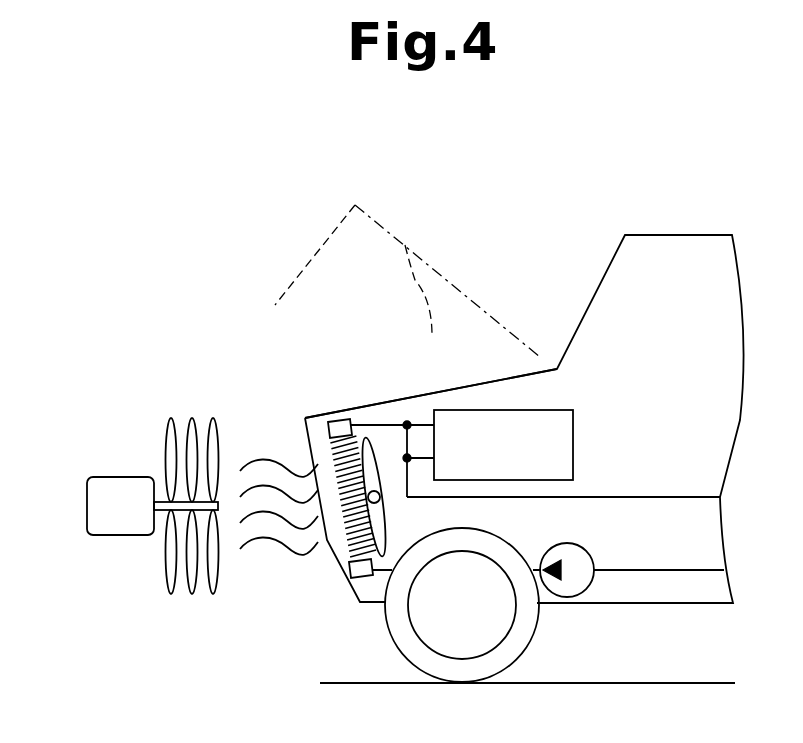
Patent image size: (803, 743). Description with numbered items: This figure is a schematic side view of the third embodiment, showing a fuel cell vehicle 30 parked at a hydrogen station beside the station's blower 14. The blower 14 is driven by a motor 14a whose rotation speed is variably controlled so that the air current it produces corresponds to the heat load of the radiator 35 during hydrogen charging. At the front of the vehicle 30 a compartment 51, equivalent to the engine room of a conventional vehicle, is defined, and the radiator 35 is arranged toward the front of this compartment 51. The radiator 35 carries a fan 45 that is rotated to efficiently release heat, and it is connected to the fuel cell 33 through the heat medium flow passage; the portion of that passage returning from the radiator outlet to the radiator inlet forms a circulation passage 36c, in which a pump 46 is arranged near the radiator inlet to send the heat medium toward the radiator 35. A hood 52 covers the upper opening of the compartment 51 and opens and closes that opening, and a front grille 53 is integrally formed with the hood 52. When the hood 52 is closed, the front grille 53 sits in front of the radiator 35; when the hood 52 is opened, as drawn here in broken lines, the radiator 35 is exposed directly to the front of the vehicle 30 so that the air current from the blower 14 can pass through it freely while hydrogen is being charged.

The vehicle 30 is at (597, 290).
The front grille 53 is at (318, 252).
The compartment 51 is at (390, 413).
The hood 52 is at (422, 393).
The fuel cell 33 is at (574, 446).
The fan 45 is at (385, 530).
The radiator 35 is at (359, 580).
The blower 14 is at (172, 392).
The motor 14a is at (122, 492).
The pump 46 is at (590, 553).
The circulation passage 36c is at (686, 570).